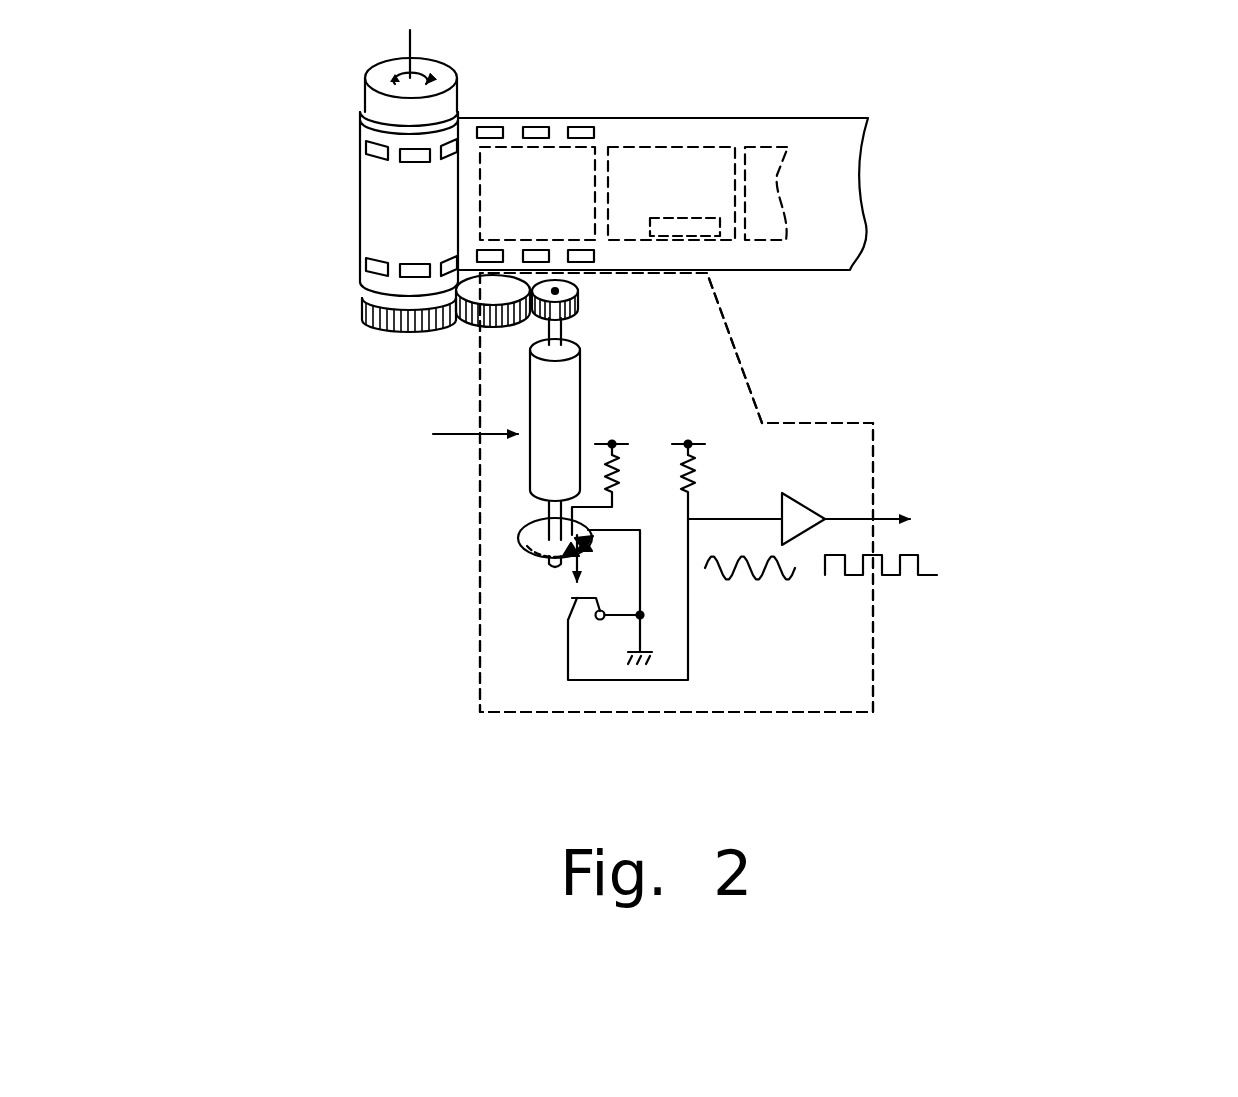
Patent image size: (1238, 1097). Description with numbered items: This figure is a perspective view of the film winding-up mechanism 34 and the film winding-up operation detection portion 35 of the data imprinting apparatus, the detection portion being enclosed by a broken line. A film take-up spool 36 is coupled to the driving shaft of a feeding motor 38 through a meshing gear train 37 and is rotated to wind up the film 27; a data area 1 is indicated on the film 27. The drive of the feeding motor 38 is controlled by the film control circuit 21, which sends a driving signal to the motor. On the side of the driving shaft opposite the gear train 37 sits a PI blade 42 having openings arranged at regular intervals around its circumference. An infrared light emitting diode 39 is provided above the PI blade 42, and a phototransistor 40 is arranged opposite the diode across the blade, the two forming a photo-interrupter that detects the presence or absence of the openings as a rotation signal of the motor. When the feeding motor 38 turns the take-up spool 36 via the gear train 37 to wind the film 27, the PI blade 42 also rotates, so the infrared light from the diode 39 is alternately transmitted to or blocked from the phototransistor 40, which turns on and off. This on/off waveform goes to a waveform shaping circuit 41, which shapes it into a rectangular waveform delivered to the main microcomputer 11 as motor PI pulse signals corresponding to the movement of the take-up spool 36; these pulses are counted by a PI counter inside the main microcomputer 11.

The magnetic recording area 1 is at (688, 216).
The main microcomputer 11 is at (1012, 536).
The film control circuit 21 is at (337, 443).
The film 27 is at (674, 116).
The film winding-up mechanism 34 is at (676, 492).
The film winding-up operation detection portion 35 is at (852, 377).
The film take-up spool 36 is at (447, 66).
The gear train 37 is at (580, 290).
The feeding motor 38 is at (582, 412).
The infrared light emitting diode 39 is at (596, 529).
The phototransistor 40 is at (572, 600).
The waveform shaping circuit 41 is at (800, 502).
The PI blade 42 is at (527, 546).